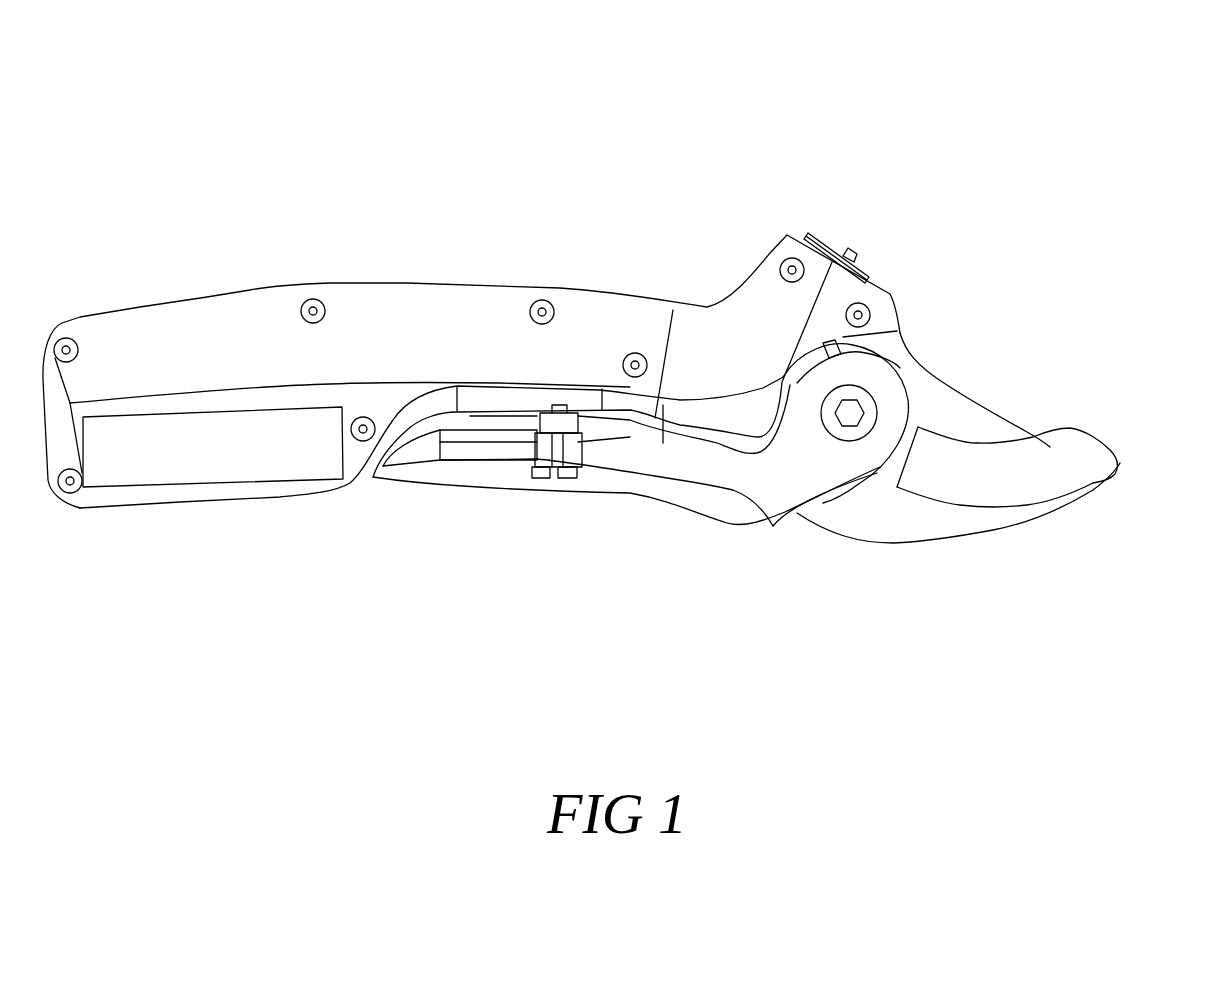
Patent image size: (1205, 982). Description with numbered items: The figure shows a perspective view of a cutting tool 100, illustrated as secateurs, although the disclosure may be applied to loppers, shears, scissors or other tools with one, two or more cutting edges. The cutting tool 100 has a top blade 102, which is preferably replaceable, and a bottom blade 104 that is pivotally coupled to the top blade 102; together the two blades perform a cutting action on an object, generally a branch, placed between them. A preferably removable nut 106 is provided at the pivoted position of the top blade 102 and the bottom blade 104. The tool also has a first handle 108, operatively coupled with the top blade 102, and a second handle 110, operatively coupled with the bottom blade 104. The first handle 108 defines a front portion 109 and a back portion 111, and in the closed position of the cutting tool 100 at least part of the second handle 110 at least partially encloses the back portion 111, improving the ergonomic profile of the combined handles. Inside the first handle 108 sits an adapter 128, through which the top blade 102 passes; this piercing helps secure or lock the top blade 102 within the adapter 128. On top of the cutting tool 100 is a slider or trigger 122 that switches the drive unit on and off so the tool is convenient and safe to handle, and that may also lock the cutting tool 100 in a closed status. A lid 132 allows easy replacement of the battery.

The cutting tool 100 is at (948, 110).
The top blade 102 is at (1043, 452).
The bottom blade 104 is at (970, 518).
The nut 106 is at (854, 408).
The first handle 108 is at (713, 532).
The front portion 109 is at (772, 534).
The second handle 110 is at (541, 296).
The back portion 111 is at (374, 489).
The slider or trigger 122 is at (852, 243).
The adapter 128 is at (608, 457).
The lid 132 is at (212, 487).